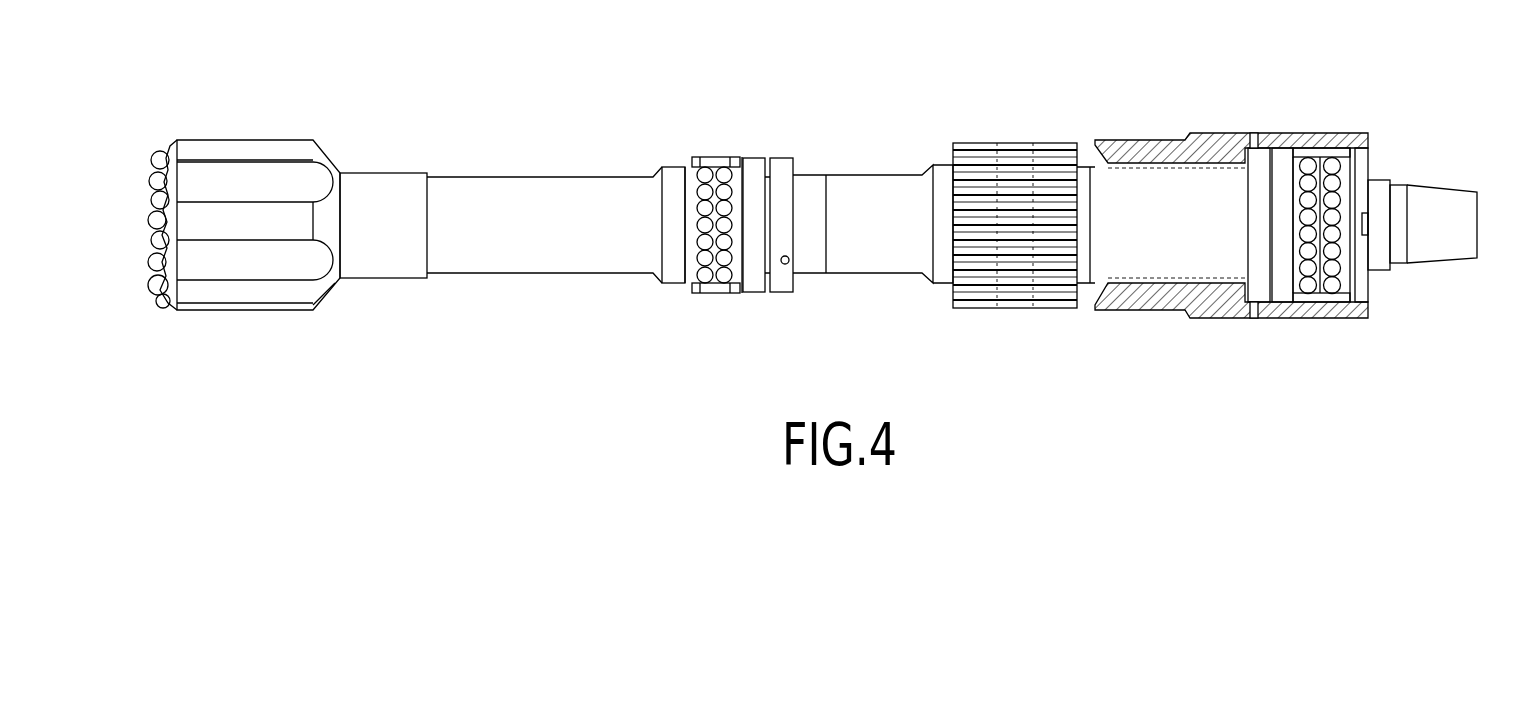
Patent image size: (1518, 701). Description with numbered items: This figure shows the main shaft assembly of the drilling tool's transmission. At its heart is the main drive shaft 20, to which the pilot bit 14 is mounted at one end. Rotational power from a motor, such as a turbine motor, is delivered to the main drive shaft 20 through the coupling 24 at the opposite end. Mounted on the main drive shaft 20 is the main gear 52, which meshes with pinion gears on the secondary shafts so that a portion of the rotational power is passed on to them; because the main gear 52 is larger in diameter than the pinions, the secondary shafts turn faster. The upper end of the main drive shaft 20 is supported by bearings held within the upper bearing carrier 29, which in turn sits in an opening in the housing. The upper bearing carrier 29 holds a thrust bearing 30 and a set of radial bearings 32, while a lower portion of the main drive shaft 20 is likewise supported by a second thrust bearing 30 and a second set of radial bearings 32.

The pilot bit 14 is at (252, 310).
The main drive shaft 20 is at (893, 273).
The coupling 24 is at (1437, 258).
The upper bearing carrier 29 is at (1210, 133).
The thrust bearing 30 is at (755, 292).
The radial bearings 32 is at (705, 157).
The main gear 52 is at (1013, 308).